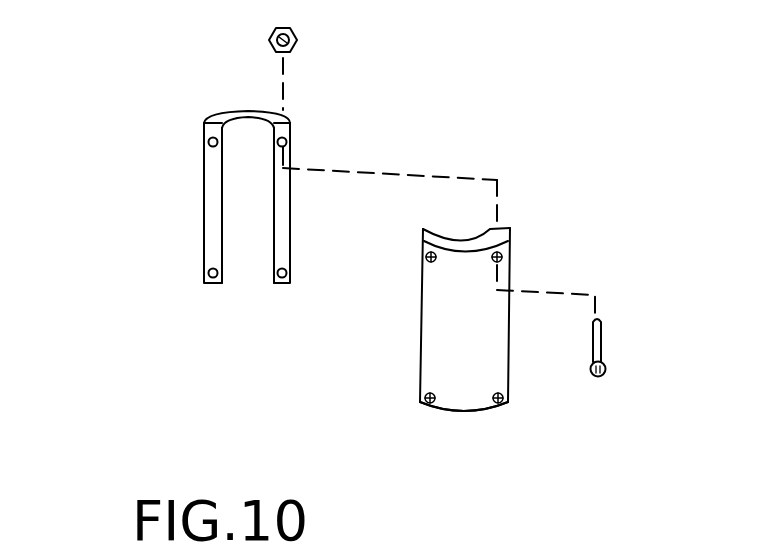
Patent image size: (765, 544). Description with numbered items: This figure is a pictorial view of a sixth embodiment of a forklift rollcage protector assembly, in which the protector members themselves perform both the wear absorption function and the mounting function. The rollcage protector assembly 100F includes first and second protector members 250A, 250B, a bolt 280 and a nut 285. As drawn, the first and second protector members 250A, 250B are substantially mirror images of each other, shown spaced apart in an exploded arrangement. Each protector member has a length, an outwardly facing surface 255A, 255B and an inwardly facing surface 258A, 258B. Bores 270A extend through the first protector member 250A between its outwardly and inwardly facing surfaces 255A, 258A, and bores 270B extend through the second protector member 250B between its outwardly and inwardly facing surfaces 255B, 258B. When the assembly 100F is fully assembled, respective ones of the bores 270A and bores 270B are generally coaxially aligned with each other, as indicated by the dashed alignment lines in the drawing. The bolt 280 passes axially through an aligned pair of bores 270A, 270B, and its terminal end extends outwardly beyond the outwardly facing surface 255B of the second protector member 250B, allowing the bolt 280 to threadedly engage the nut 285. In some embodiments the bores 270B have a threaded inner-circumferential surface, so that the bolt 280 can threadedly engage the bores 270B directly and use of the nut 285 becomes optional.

The rollcage protector assembly 100F is at (432, 104).
The first protector member 250A is at (470, 320).
The second protector member 250B is at (215, 207).
The outwardly facing surface 255A is at (453, 380).
The outwardly facing surface 255B is at (240, 110).
The inwardly facing surface 258A is at (463, 237).
The inwardly facing surface 258B is at (243, 145).
The bores 270A is at (500, 404).
The bores 270B is at (195, 290).
The bolt 280 is at (590, 362).
The nut 285 is at (296, 34).